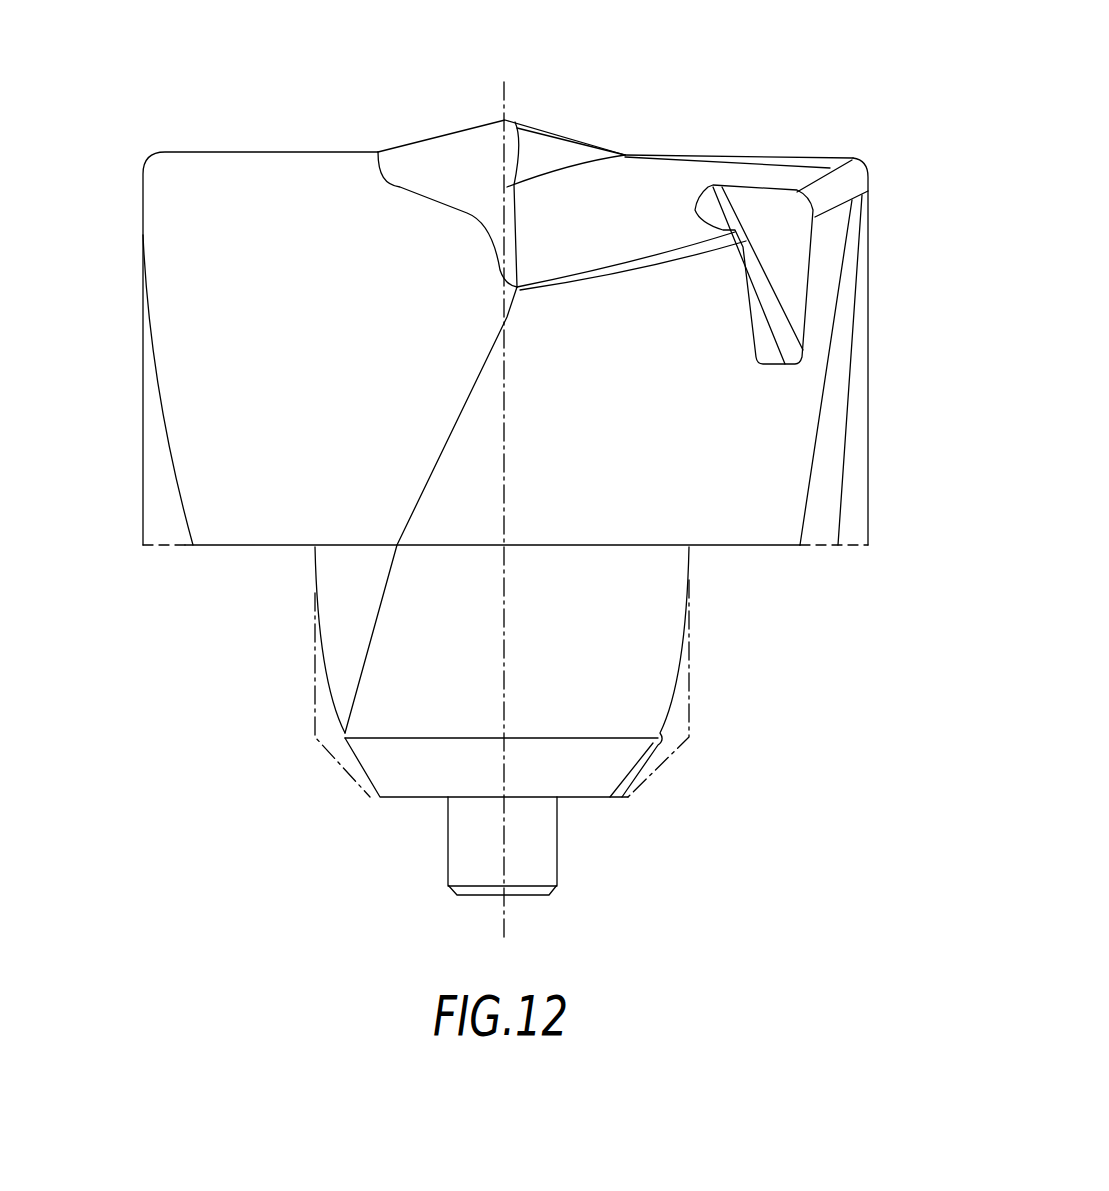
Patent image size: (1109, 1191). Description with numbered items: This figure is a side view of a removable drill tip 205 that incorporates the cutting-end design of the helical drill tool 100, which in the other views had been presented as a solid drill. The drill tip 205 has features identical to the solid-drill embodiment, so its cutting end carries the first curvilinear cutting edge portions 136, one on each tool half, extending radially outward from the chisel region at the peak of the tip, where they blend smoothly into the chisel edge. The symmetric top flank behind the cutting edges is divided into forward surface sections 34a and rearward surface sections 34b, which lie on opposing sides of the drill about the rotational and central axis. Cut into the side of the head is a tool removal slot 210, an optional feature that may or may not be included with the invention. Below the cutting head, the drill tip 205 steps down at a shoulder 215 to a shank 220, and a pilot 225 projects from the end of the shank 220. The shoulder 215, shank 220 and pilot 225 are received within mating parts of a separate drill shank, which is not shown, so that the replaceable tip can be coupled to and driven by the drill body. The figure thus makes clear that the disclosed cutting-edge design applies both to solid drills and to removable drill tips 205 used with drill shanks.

The tool 100 is at (776, 37).
The removable drill tip 205 is at (122, 222).
The first curvilinear cutting edge portion 136 is at (460, 130).
The forward surface section 34a is at (780, 158).
The rearward surface section 34b is at (806, 172).
The tool removal slot 210 is at (785, 251).
The shoulder 215 is at (205, 545).
The shank 220 is at (365, 727).
The pilot 225 is at (463, 830).